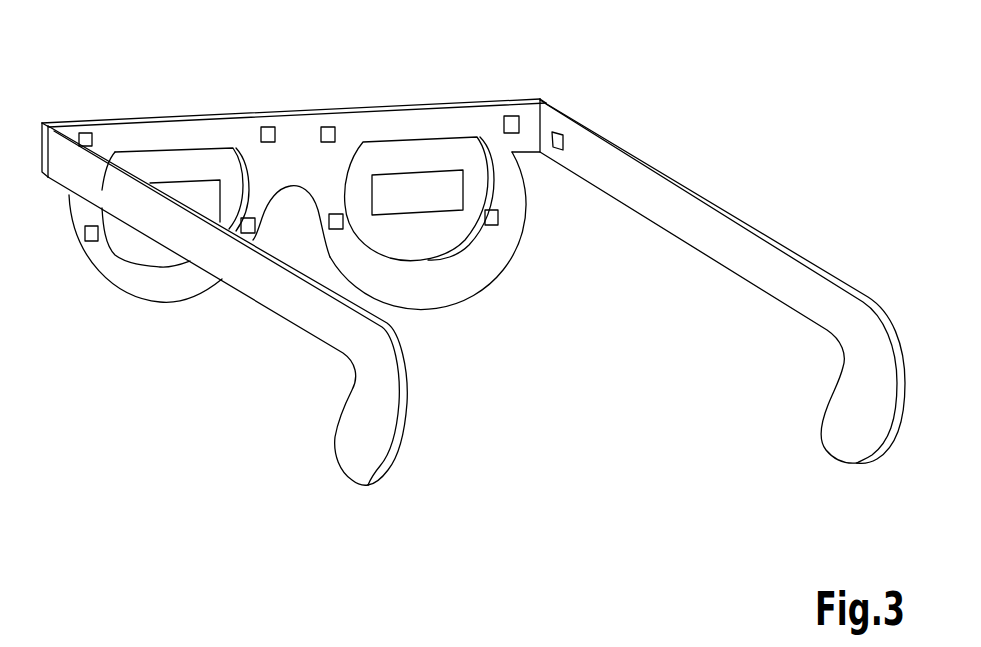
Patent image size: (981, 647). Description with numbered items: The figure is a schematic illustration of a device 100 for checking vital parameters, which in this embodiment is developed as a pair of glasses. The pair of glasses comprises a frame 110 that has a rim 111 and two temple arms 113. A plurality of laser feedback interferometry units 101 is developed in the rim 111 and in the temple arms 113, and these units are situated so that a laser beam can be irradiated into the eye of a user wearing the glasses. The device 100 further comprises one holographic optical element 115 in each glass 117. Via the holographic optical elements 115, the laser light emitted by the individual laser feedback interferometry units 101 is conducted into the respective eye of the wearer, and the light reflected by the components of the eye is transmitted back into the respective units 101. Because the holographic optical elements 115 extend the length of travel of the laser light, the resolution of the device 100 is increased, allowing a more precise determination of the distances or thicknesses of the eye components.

The device for checking vital parameters 100 is at (138, 76).
The laser feedback interferometry units 101 is at (85, 135).
The frame 110 is at (668, 153).
The rim 111 is at (217, 128).
The temple arms 113 is at (777, 247).
The holographic optical element 115 is at (186, 192).
The glass 117 is at (178, 165).